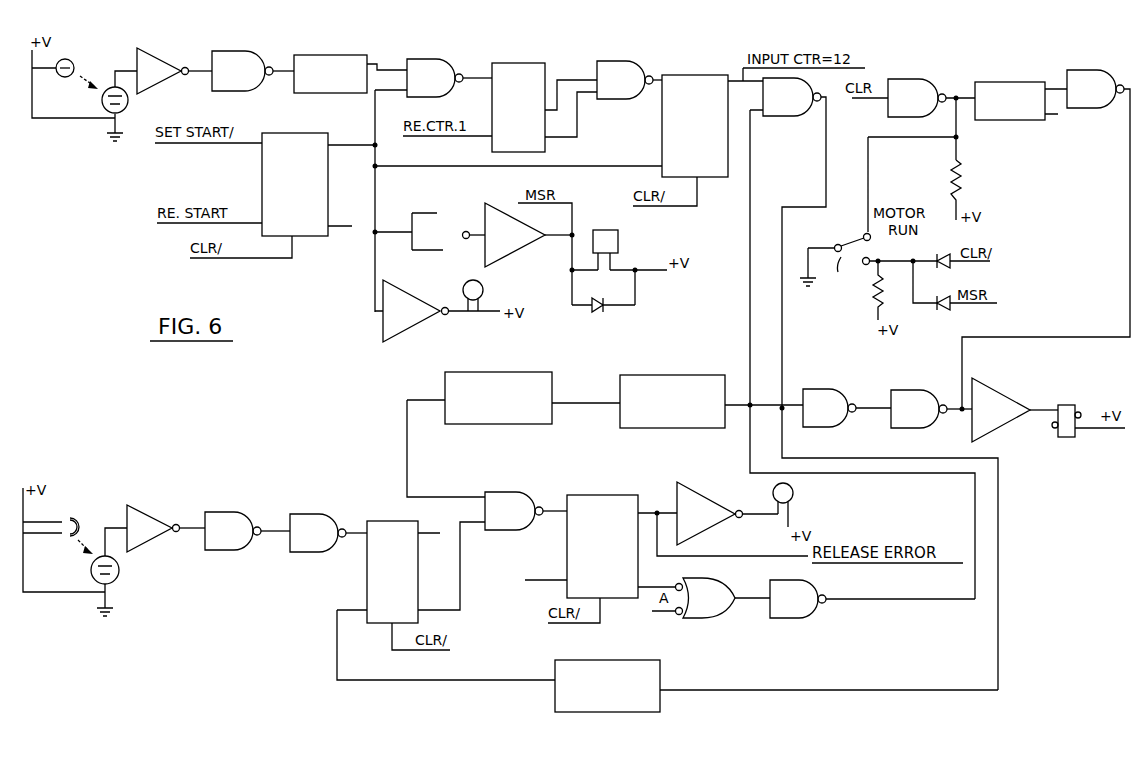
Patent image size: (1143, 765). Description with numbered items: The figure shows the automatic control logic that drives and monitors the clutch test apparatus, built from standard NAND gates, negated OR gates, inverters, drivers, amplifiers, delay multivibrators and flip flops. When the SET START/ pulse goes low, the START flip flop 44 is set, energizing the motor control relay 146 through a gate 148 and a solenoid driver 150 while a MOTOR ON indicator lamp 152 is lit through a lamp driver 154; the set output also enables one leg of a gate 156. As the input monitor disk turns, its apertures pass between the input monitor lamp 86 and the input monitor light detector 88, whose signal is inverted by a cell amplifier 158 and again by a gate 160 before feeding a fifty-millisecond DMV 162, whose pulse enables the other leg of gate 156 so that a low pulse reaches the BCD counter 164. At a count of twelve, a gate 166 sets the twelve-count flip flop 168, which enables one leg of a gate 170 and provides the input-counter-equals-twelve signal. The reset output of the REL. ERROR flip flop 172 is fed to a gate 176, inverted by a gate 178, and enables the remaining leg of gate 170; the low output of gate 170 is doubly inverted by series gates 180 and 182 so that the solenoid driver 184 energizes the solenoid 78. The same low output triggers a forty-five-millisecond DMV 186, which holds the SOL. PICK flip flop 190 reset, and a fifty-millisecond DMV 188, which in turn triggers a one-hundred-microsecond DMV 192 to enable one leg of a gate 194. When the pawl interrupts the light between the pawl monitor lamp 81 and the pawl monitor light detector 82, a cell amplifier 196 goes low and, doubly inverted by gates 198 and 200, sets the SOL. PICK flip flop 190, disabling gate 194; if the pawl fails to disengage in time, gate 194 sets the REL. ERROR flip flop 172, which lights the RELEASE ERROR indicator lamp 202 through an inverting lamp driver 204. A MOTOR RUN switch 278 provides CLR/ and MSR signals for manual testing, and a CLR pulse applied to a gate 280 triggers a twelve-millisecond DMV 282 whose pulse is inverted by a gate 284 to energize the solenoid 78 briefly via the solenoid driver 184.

The START flip flop 44 is at (330, 160).
The solenoid 78 is at (1078, 440).
The pawl monitor lamp 81 is at (73, 512).
The pawl monitor light detector 82 is at (121, 572).
The input monitor lamp 86 is at (72, 60).
The input monitor light detector 88 is at (101, 98).
The motor control relay 146 is at (618, 238).
The gate 148 is at (437, 212).
The solenoid driver 150 is at (518, 247).
The MOTOR ON indicator lamp 152 is at (484, 288).
The lamp driver 154 is at (424, 320).
The gate 156 is at (432, 58).
The cell amplifier 158 is at (160, 57).
The gate 160 is at (243, 52).
The 50-millisecond DMV 162 is at (320, 95).
The binary count to decimal (BCD) 12 counter 164 is at (535, 62).
The gate 166 is at (625, 60).
The 12-COUNT flip flop 168 is at (693, 62).
The gate 170 is at (800, 112).
The REL. ERROR flip flop 172 is at (565, 545).
The gate 176 is at (710, 619).
The gate 178 is at (808, 620).
The gate 180 is at (835, 430).
The gate 182 is at (925, 430).
The solenoid driver 184 is at (1005, 435).
The 45-millisecond DMV 186 is at (662, 676).
The 50-millisecond DMV 188 is at (667, 429).
The SOL. PICK flip flop 190 is at (365, 582).
The 100-microsecond DMV 192 is at (552, 424).
The gate 194 is at (512, 490).
The cell amplifier 196 is at (160, 515).
The gate 198 is at (252, 505).
The gate 200 is at (318, 553).
The RELEASE ERROR indicator lamp 202 is at (795, 493).
The inverting lamp driver 204 is at (718, 522).
The MOTOR RUN switch 278 is at (835, 264).
The gate 280 is at (912, 77).
The 12-millisecond DMV 282 is at (998, 80).
The gate 284 is at (1090, 70).